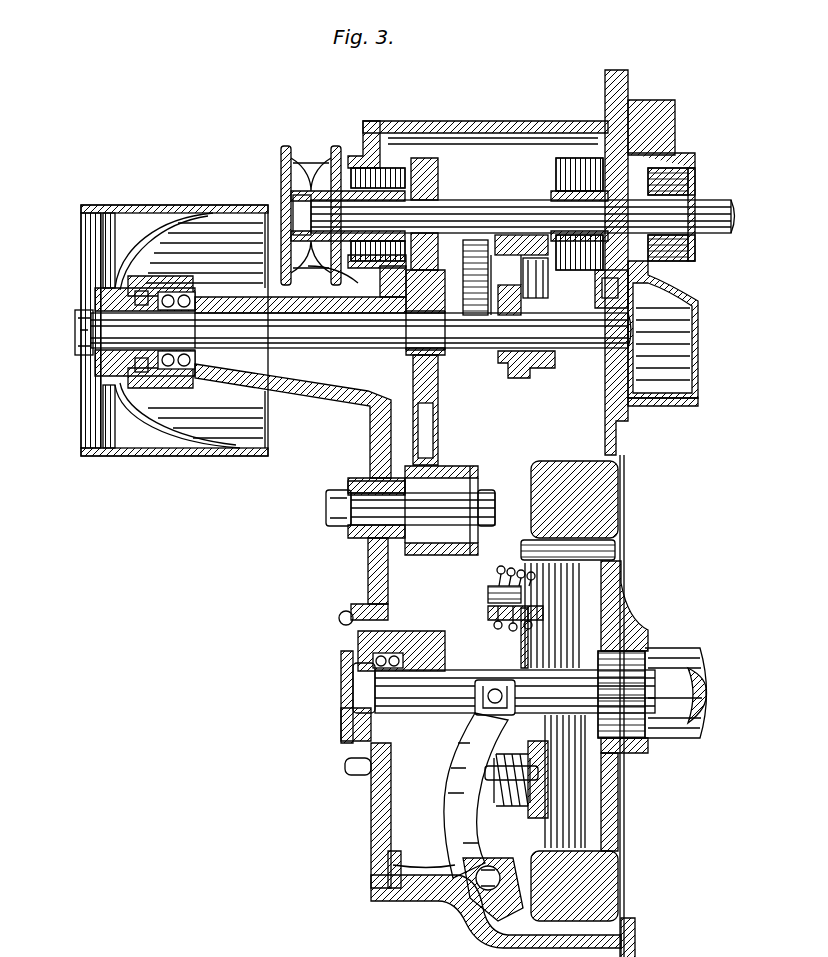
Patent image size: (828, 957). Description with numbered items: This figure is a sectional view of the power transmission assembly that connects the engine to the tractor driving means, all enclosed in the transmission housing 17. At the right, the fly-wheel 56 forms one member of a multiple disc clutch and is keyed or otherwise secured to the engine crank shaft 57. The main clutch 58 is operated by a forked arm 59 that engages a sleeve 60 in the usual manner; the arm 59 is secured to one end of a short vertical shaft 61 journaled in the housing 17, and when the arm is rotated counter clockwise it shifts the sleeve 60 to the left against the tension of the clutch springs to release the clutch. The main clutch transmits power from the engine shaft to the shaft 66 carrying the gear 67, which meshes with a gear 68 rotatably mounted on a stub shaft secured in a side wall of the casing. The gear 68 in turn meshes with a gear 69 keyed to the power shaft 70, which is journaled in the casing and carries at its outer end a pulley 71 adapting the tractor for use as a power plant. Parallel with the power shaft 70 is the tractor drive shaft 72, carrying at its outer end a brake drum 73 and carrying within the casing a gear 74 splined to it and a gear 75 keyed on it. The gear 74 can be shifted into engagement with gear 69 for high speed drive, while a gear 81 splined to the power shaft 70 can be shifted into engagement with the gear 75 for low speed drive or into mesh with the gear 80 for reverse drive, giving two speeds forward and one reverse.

The transmission housing 17 is at (362, 430).
The fly-wheel 56 is at (630, 637).
The engine crank shaft 57 is at (680, 647).
The main clutch 58 is at (538, 822).
The forked arm 59 is at (440, 795).
The sleeve 60 is at (512, 658).
The short vertical shaft 61 is at (488, 882).
The shaft 66 is at (443, 672).
The gear 67 is at (433, 647).
The gear 68 is at (432, 563).
The gear 69 is at (432, 365).
The power shaft 70 is at (377, 332).
The pulley 71 is at (137, 448).
The tractor drive shaft 72 is at (483, 192).
The brake drum 73 is at (298, 142).
The gear 74 is at (433, 163).
The gear 75 is at (548, 128).
The gear 80 is at (498, 258).
The gear 81 is at (545, 372).